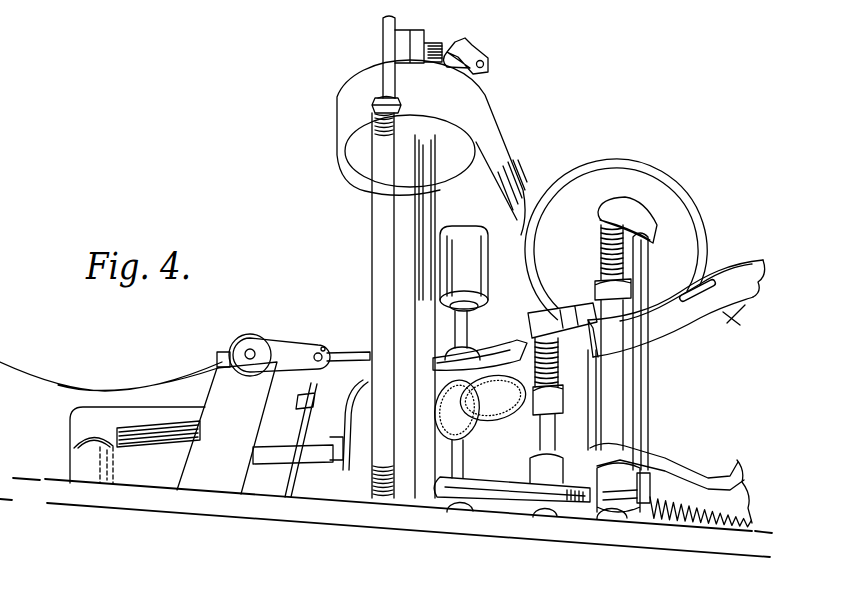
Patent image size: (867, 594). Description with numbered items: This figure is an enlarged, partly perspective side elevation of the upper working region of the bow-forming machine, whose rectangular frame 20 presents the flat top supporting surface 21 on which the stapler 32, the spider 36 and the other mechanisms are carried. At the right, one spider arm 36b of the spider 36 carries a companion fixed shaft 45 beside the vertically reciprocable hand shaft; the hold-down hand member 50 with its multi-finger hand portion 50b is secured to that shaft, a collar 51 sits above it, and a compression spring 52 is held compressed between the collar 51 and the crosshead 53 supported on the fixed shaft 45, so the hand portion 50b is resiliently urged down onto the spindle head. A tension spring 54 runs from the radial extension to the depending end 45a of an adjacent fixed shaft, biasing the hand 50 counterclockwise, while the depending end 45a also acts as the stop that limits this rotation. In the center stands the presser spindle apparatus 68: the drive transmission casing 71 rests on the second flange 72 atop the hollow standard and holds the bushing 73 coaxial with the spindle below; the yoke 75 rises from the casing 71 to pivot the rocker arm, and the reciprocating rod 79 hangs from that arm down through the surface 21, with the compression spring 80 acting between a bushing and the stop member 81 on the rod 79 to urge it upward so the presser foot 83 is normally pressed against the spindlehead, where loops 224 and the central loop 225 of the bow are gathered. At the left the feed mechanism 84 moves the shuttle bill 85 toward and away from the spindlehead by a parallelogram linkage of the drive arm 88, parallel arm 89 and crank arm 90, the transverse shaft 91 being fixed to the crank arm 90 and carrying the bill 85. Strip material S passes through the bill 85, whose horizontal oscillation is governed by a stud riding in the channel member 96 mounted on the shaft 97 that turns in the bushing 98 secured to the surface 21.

The frame 20 is at (455, 577).
The top supporting surface 21 is at (548, 531).
The stapler 32 is at (614, 158).
The spider 36 is at (720, 459).
The spider arm 36b is at (705, 464).
The fixed shaft 45 is at (647, 277).
The depending end 45a is at (650, 490).
The hold-down hand member 50 is at (667, 354).
The hand portion 50b is at (753, 300).
The collar 51 is at (598, 292).
The compression spring 52 is at (601, 246).
The crosshead 53 is at (645, 216).
The tension spring 54 is at (672, 521).
The presser spindle apparatus 68 is at (487, 36).
The drive transmission casing 71 is at (352, 92).
The second flange 72 is at (368, 164).
The bushing 73 is at (468, 267).
The yoke 75 is at (387, 30).
The reciprocating rod 79 is at (383, 56).
The compression spring 80 is at (376, 116).
The stop member 81 is at (396, 106).
The presser foot 83 is at (457, 333).
The feed mechanism 84 is at (326, 337).
The shuttle bill 85 is at (351, 352).
The drive arm 88 is at (226, 460).
The parallel arm 89 is at (290, 471).
The crank arm 90 is at (289, 346).
The transverse shaft 91 is at (251, 349).
The channel member 96 is at (170, 420).
The shaft 97 is at (88, 440).
The bushing 98 is at (77, 462).
The loops 224 is at (496, 407).
The central loop 225 is at (465, 442).
The strip material S is at (123, 387).